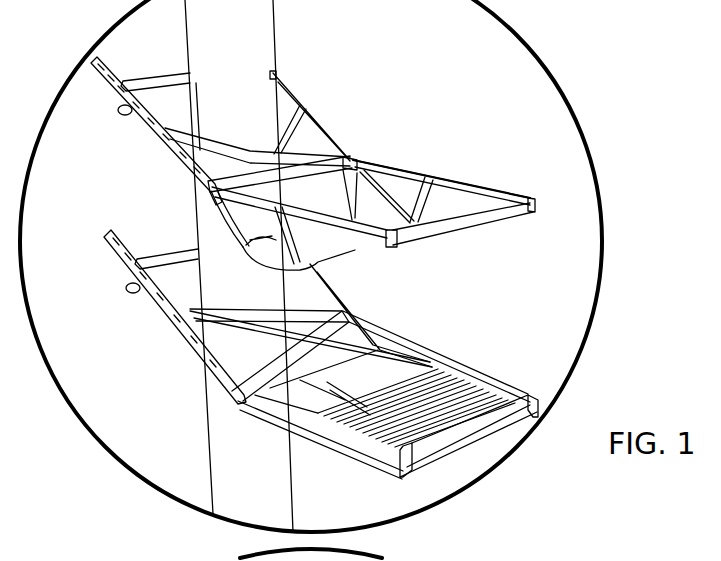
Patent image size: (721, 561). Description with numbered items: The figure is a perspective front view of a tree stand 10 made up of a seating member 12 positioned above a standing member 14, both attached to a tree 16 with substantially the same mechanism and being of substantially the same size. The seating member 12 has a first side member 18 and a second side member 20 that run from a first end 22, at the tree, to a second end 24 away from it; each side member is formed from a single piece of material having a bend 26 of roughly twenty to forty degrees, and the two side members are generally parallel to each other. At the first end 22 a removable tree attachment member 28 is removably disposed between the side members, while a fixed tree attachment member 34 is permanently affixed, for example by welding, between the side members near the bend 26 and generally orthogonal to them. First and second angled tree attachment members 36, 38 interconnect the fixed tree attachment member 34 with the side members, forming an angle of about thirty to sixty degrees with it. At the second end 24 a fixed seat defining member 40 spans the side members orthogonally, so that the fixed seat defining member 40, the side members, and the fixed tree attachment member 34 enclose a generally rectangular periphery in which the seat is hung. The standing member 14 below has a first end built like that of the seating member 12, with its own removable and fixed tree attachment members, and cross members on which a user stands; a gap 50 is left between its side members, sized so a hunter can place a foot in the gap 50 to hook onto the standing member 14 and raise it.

The tree stand 10 is at (620, 67).
The seating member 12 is at (549, 175).
The standing member 14 is at (541, 379).
The tree 16 is at (263, 32).
The first side member 18 is at (470, 190).
The second side member 20 is at (320, 222).
The first end 22 is at (110, 96).
The second end 24 is at (392, 262).
The bend 26 is at (347, 157).
The removable tree attachment member 28 is at (153, 83).
The fixed tree attachment member 34 is at (200, 181).
The first angled tree attachment member 36 is at (167, 143).
The second angled tree attachment member 38 is at (293, 123).
The fixed seat defining member 40 is at (448, 227).
The gap 50 is at (400, 378).